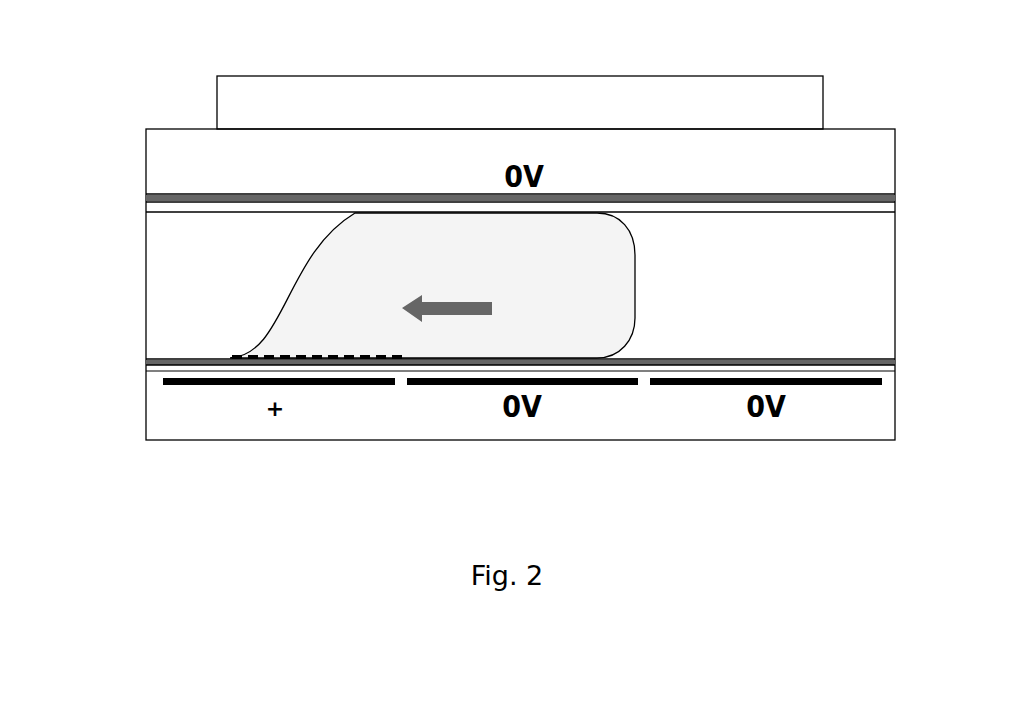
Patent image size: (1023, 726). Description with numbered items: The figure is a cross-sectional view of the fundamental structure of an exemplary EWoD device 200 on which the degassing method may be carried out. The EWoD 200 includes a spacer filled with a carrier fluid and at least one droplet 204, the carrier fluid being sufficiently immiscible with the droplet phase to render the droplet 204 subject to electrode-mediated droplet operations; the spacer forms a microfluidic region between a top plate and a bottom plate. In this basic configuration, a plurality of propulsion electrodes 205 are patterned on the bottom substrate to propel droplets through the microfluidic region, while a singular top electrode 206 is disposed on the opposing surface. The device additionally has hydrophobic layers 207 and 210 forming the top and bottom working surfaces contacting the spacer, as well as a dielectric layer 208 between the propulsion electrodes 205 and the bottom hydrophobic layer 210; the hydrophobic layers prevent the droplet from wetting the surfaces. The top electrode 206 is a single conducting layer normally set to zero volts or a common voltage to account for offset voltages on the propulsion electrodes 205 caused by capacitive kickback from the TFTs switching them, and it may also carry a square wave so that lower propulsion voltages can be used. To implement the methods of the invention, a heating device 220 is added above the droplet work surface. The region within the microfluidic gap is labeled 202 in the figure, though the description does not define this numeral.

The EWoD device 200 is at (149, 112).
The fluid medium / gap 202 is at (752, 298).
The droplet 204 is at (535, 336).
The propulsion electrodes 205 is at (860, 395).
The top electrode 206 is at (860, 193).
The hydrophobic layer 207 is at (895, 212).
The dielectric layer 208 is at (897, 372).
The hydrophobic layer 210 is at (895, 360).
The heating device 220 is at (500, 112).